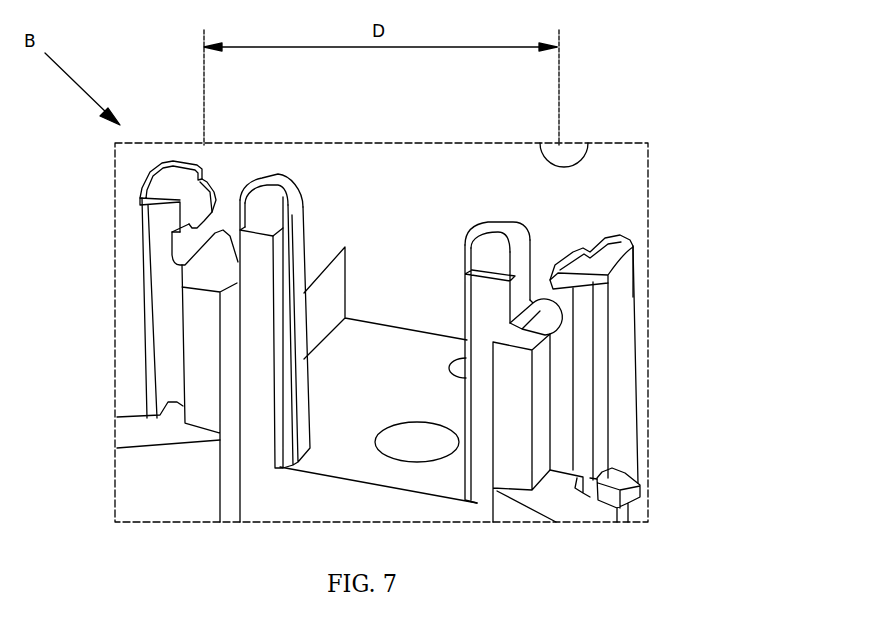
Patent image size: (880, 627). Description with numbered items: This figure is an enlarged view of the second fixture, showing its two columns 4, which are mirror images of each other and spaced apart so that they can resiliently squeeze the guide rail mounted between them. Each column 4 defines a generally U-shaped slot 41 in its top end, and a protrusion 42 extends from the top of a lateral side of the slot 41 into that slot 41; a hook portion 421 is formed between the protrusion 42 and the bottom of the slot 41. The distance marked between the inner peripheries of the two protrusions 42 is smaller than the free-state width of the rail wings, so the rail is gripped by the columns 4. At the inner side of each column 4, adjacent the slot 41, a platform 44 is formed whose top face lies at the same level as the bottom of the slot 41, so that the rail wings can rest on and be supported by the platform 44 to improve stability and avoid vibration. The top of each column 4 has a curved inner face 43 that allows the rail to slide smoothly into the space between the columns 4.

The column 4 is at (163, 317).
The U-shaped slot 41 is at (226, 212).
The protrusion 42 is at (163, 223).
The hook portion 421 is at (570, 312).
The curved inner face 43 is at (286, 197).
The platform 44 is at (205, 373).